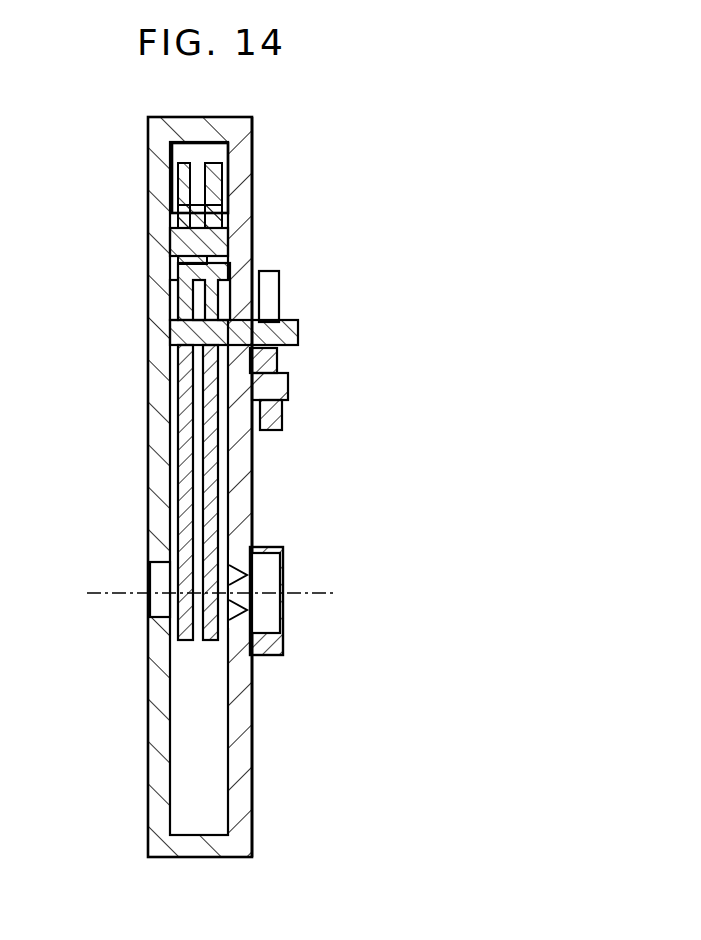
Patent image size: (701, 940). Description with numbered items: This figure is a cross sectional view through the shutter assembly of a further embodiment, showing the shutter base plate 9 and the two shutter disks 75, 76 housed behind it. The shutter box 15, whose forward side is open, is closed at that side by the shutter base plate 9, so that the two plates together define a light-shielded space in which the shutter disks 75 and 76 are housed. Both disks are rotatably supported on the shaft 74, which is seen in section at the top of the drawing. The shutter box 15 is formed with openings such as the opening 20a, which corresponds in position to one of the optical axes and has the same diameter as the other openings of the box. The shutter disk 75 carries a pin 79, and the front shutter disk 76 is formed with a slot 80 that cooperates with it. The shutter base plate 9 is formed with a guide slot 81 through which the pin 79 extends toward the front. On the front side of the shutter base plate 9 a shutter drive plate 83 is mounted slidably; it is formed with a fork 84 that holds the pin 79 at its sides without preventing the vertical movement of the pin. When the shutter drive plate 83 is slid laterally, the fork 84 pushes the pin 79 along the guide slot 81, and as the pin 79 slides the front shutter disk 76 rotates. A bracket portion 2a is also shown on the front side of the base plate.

The shaft 74 is at (226, 243).
The fork 84 is at (270, 272).
The slot 80 is at (183, 312).
The guide slot 81 is at (257, 320).
The pin 79 is at (285, 333).
The shutter drive plate 83 is at (300, 411).
The shutter disk 75 is at (185, 480).
The shutter disk 76 is at (212, 483).
The bracket 2a is at (247, 584).
The opening 20a is at (158, 610).
The shutter box 15 is at (153, 770).
The shutter base plate 9 is at (247, 768).